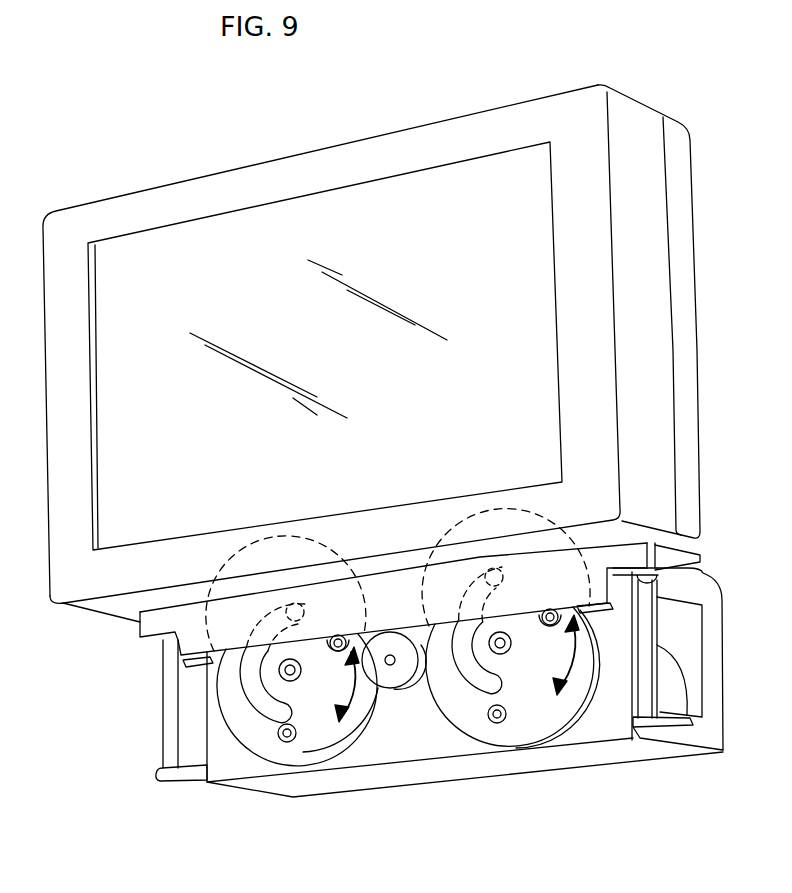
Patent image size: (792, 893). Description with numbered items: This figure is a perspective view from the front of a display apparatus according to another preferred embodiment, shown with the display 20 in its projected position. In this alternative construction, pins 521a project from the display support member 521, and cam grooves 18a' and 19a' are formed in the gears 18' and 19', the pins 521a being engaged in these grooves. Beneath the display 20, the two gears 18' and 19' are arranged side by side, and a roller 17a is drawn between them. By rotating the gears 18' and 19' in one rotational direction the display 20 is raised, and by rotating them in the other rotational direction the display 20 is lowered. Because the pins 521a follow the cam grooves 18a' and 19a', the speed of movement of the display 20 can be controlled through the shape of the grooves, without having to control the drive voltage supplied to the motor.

The display 20 is at (677, 183).
The display support member 521 is at (140, 628).
The pins 521a is at (487, 573).
The gear 19' is at (292, 689).
The cam groove 19a' is at (181, 678).
The roller 17a is at (406, 690).
The gear 18' is at (520, 669).
The cam groove 18a' is at (494, 700).